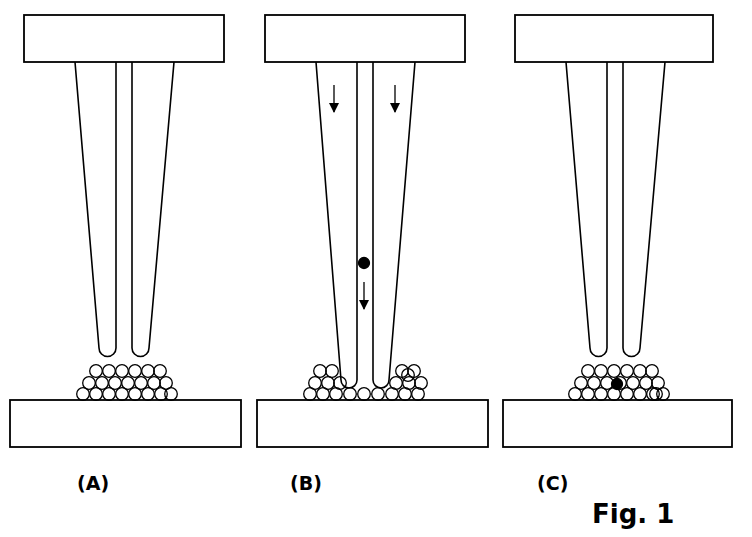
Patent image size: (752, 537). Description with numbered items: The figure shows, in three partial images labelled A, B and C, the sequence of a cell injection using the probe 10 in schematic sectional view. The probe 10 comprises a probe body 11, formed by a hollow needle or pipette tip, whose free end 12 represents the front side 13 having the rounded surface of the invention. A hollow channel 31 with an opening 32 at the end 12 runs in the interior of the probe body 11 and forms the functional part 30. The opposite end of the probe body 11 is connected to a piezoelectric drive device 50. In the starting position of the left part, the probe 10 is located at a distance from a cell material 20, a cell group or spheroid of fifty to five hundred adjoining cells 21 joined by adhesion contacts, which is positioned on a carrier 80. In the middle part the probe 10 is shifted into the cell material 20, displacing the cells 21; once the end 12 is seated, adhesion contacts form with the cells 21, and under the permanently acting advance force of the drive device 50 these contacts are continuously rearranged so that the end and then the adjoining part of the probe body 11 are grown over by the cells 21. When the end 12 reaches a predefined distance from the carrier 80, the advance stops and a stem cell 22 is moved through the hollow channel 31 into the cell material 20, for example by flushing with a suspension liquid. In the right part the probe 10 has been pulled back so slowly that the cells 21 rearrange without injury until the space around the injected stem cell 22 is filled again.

The probe 10 is at (338, 225).
The probe body 11 is at (145, 240).
The free end 12 is at (161, 344).
The front side 13 is at (104, 356).
The cell material 20 is at (201, 368).
The cells 21 is at (160, 372).
The stem cell 22 is at (368, 262).
The functional part 30 is at (138, 189).
The hollow channel 31 is at (126, 270).
The opening 32 is at (125, 357).
The piezoelectric drive device 50 is at (213, 39).
The carrier 80 is at (229, 443).